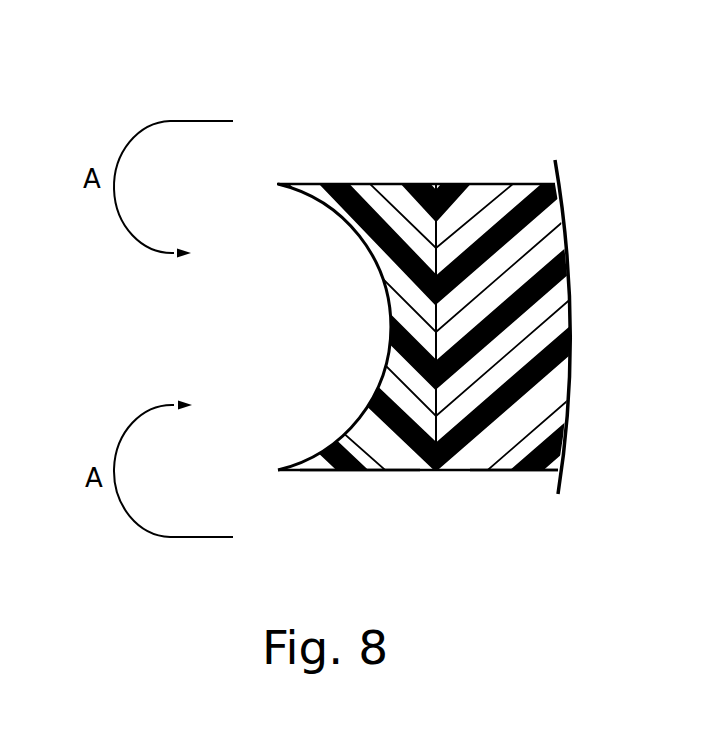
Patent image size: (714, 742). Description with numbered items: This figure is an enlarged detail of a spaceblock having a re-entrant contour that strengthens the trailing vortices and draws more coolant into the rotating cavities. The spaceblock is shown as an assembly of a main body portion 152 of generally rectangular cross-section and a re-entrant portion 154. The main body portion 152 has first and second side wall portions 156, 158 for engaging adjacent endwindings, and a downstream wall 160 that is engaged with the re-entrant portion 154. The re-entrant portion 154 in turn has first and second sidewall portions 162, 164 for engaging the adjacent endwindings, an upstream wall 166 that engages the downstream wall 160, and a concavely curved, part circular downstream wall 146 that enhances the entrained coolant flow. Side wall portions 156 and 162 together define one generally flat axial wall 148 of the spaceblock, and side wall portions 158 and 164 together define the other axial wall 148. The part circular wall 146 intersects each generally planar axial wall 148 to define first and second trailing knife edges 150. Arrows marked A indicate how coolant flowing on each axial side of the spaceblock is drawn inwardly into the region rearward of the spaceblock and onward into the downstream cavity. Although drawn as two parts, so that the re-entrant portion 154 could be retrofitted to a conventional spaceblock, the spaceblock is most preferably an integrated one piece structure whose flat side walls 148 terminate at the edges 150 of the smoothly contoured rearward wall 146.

The downstream wall 146 is at (390, 315).
The axial wall 148 is at (470, 126).
The trailing knife edge 150 is at (280, 184).
The main body portion 152 is at (517, 372).
The re-entrant portion 154 is at (405, 450).
The first side wall portion 156 is at (532, 184).
The second side wall portion 158 is at (518, 470).
The downstream wall 160 is at (437, 278).
The first sidewall portion 162 is at (402, 184).
The second sidewall portion 164 is at (358, 470).
The upstream wall 166 is at (437, 398).